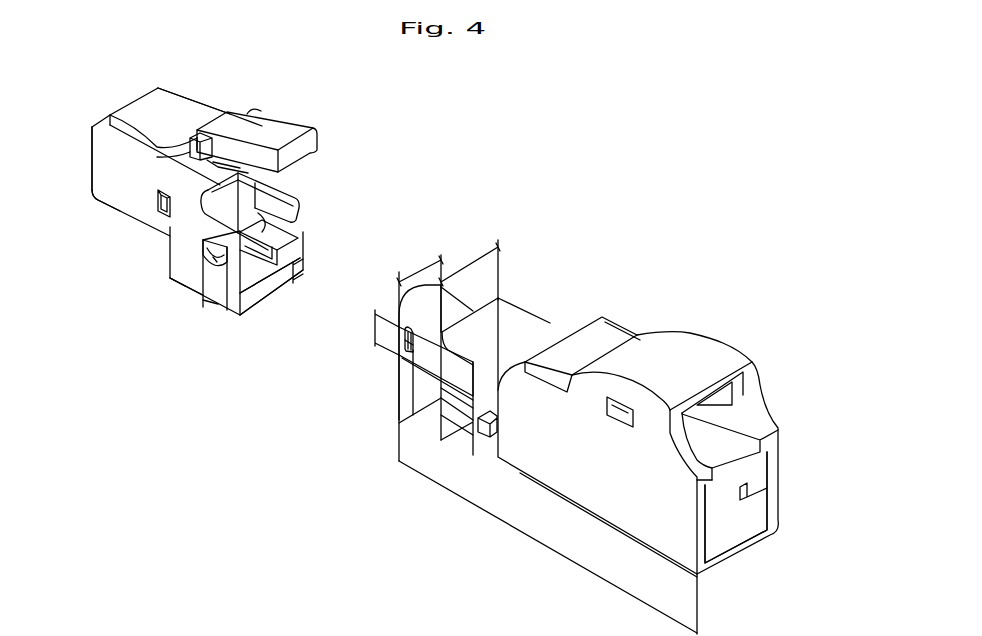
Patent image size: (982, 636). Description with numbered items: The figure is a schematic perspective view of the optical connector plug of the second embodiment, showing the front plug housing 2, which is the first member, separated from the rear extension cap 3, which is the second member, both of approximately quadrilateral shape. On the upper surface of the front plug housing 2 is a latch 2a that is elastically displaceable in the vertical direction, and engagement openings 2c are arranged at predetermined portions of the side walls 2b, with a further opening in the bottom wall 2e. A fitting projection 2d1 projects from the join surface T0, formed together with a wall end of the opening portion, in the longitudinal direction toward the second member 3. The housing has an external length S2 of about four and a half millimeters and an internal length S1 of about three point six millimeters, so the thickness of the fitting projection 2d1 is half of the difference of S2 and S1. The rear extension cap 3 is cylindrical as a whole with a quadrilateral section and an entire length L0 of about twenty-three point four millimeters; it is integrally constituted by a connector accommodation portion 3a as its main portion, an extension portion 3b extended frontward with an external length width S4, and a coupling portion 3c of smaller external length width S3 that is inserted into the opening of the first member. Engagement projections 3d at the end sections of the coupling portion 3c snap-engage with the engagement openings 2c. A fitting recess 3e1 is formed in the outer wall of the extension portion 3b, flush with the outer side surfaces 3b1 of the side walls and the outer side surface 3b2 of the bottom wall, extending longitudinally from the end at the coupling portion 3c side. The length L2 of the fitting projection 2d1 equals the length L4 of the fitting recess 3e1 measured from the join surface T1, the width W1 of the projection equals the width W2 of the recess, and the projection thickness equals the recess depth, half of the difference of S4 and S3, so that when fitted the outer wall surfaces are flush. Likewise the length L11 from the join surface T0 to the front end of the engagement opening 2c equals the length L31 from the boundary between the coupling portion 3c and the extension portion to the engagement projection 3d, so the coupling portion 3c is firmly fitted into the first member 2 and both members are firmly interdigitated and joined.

The front plug housing 2 is at (183, 103).
The latch 2a is at (267, 125).
The side wall 2b is at (173, 92).
The engagement opening 2c is at (157, 218).
The fitting projection 2d1 is at (207, 233).
The bottom wall 2e is at (105, 215).
The rear extension cap 3 is at (680, 340).
The connector accommodation portion 3a is at (758, 472).
The extension portion 3b is at (517, 317).
The outer side surface of side wall 3b1 is at (547, 323).
The outer side surface of bottom wall 3b2 is at (481, 440).
The coupling portion 3c is at (402, 330).
The engagement projection 3d is at (407, 347).
The fitting recess 3e1 is at (453, 380).
The internal length S1 is at (270, 285).
The external length S2 is at (257, 303).
The external length width of coupling portion S3 is at (417, 266).
The external length width of extension portion S4 is at (467, 256).
The join surface T0 is at (213, 257).
The join surface T1 is at (486, 299).
The width of fitting projection W1 is at (303, 277).
The width of fitting recess W2 is at (373, 328).
The entire length L0 is at (510, 527).
The length L11 is at (183, 285).
The length of fitting projection L2 is at (217, 303).
The length L31 is at (420, 420).
The length of fitting recess L4 is at (460, 445).